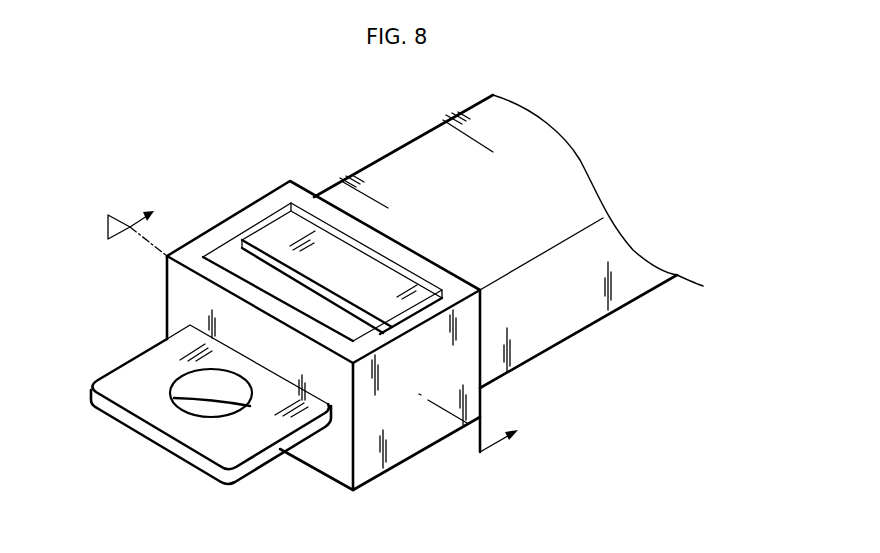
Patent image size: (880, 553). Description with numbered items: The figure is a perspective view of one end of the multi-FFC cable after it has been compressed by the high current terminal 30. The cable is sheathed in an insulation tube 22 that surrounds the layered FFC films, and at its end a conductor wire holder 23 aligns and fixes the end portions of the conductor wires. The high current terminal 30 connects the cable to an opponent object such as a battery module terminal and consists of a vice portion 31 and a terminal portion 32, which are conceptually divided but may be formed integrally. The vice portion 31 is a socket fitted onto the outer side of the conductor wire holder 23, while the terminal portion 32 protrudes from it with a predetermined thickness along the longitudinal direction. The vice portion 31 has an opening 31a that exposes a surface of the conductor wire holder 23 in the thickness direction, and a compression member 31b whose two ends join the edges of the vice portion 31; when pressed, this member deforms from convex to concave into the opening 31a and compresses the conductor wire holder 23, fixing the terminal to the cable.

The insulation tube 22 is at (412, 163).
The conductor wire holder 23 is at (296, 215).
The high current terminal 30 is at (318, 350).
The vice portion 31 is at (407, 440).
The opening 31a is at (253, 261).
The compression member 31b is at (275, 252).
The terminal portion 32 is at (133, 382).